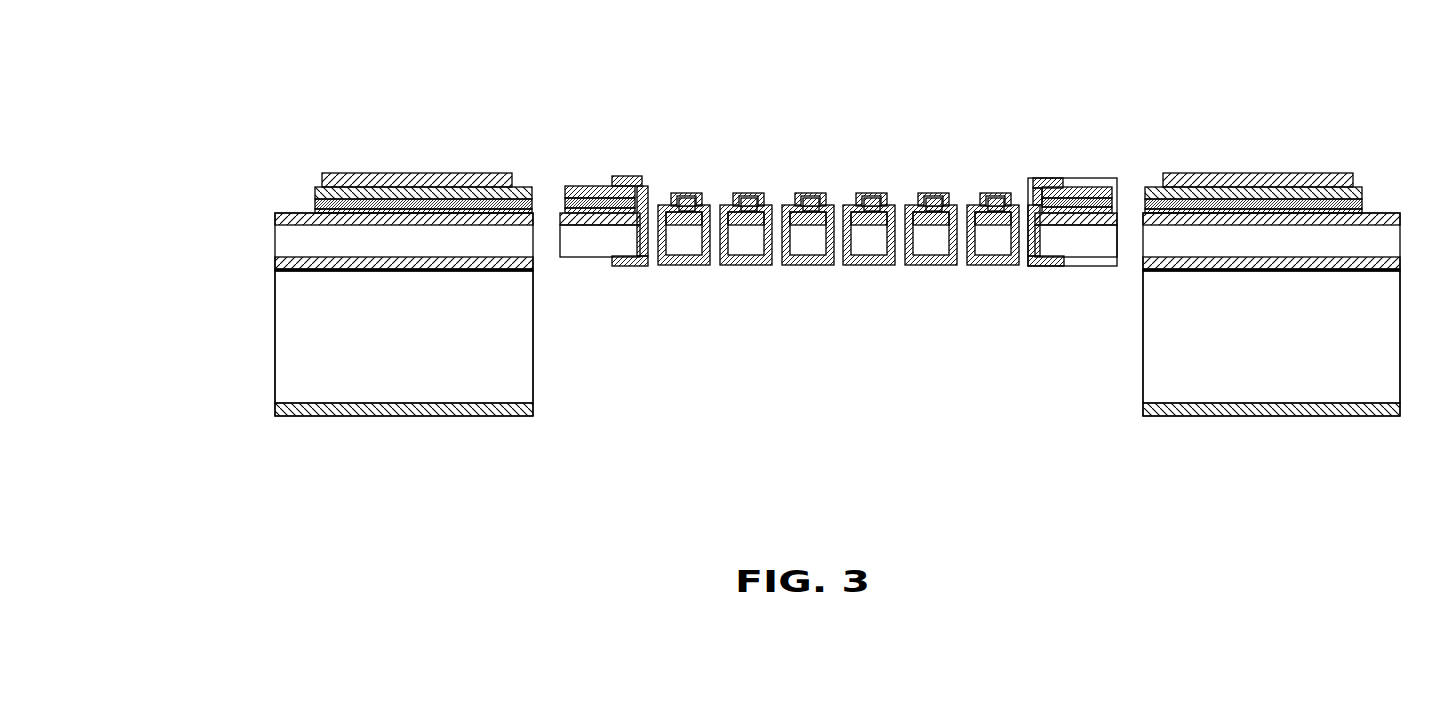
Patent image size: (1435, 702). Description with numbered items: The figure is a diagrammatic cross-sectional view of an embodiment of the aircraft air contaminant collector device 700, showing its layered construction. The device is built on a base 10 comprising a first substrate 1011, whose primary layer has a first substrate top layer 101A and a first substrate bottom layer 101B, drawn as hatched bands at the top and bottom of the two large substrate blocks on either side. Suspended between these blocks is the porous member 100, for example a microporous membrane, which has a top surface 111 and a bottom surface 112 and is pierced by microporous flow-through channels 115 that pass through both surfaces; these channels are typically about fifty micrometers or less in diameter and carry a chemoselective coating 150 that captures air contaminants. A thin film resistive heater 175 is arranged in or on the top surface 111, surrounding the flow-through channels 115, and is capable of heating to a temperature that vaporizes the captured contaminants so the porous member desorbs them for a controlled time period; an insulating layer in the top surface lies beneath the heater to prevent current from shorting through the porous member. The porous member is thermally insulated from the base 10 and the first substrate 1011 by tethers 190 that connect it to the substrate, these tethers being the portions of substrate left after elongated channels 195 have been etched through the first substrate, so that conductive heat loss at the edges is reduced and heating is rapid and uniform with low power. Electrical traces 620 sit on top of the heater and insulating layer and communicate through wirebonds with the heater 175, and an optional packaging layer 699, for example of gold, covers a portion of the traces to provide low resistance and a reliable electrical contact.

The base 10 is at (165, 290).
The porous member 100 is at (1100, 245).
The first substrate 1011 is at (317, 357).
The first substrate top layer 101A is at (285, 263).
The first substrate bottom layer 101B is at (358, 416).
The top surface 111 is at (553, 212).
The bottom surface 112 is at (596, 259).
The microporous flow-through channels 115 is at (715, 266).
The chemoselective coating 150 is at (632, 176).
The thin film resistive heater 175 is at (998, 193).
The tethers 190 is at (562, 213).
The channels 195 is at (553, 262).
The electrical traces 620 is at (1083, 187).
The packaging layer 699 is at (1305, 185).
The aircraft air contaminant collector device 700 is at (512, 557).